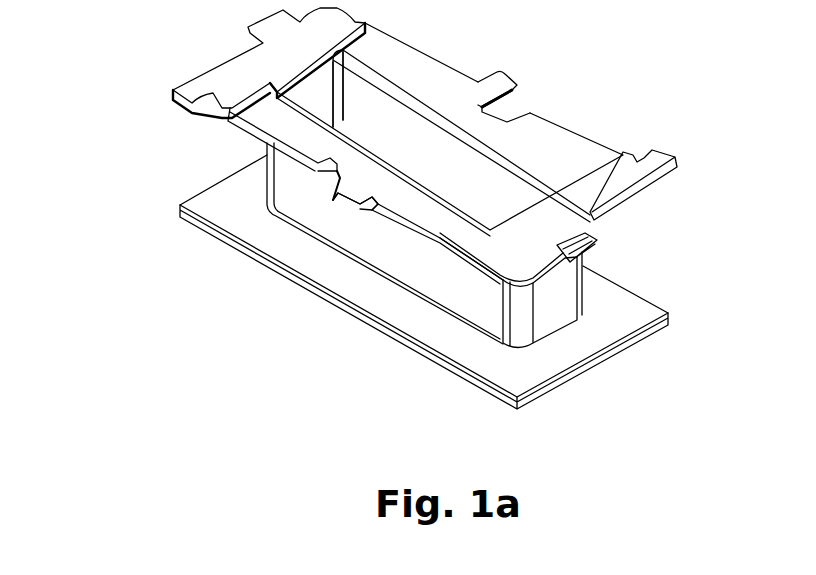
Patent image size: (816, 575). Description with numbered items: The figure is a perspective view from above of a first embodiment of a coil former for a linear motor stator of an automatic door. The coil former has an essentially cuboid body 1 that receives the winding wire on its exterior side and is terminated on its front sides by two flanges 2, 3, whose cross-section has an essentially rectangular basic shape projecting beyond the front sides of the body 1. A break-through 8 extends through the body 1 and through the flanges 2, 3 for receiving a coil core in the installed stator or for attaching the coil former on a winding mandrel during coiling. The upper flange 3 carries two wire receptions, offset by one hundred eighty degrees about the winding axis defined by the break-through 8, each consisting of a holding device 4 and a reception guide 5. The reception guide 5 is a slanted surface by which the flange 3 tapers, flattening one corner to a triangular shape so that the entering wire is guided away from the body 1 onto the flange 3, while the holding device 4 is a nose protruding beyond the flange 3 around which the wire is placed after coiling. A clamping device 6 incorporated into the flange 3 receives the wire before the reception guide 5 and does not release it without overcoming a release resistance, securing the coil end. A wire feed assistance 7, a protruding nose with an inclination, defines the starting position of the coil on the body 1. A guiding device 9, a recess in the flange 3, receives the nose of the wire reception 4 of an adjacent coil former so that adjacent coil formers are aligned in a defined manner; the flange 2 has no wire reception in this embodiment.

The body 1 is at (402, 268).
The flange 2 is at (633, 313).
The flange 3 is at (407, 50).
The holding device 4 is at (500, 82).
The reception guide 5 is at (500, 267).
The clamping device 6 is at (602, 245).
The wire feed assistance 7 is at (680, 158).
The break-through 8 is at (360, 107).
The guiding device 9 is at (513, 105).